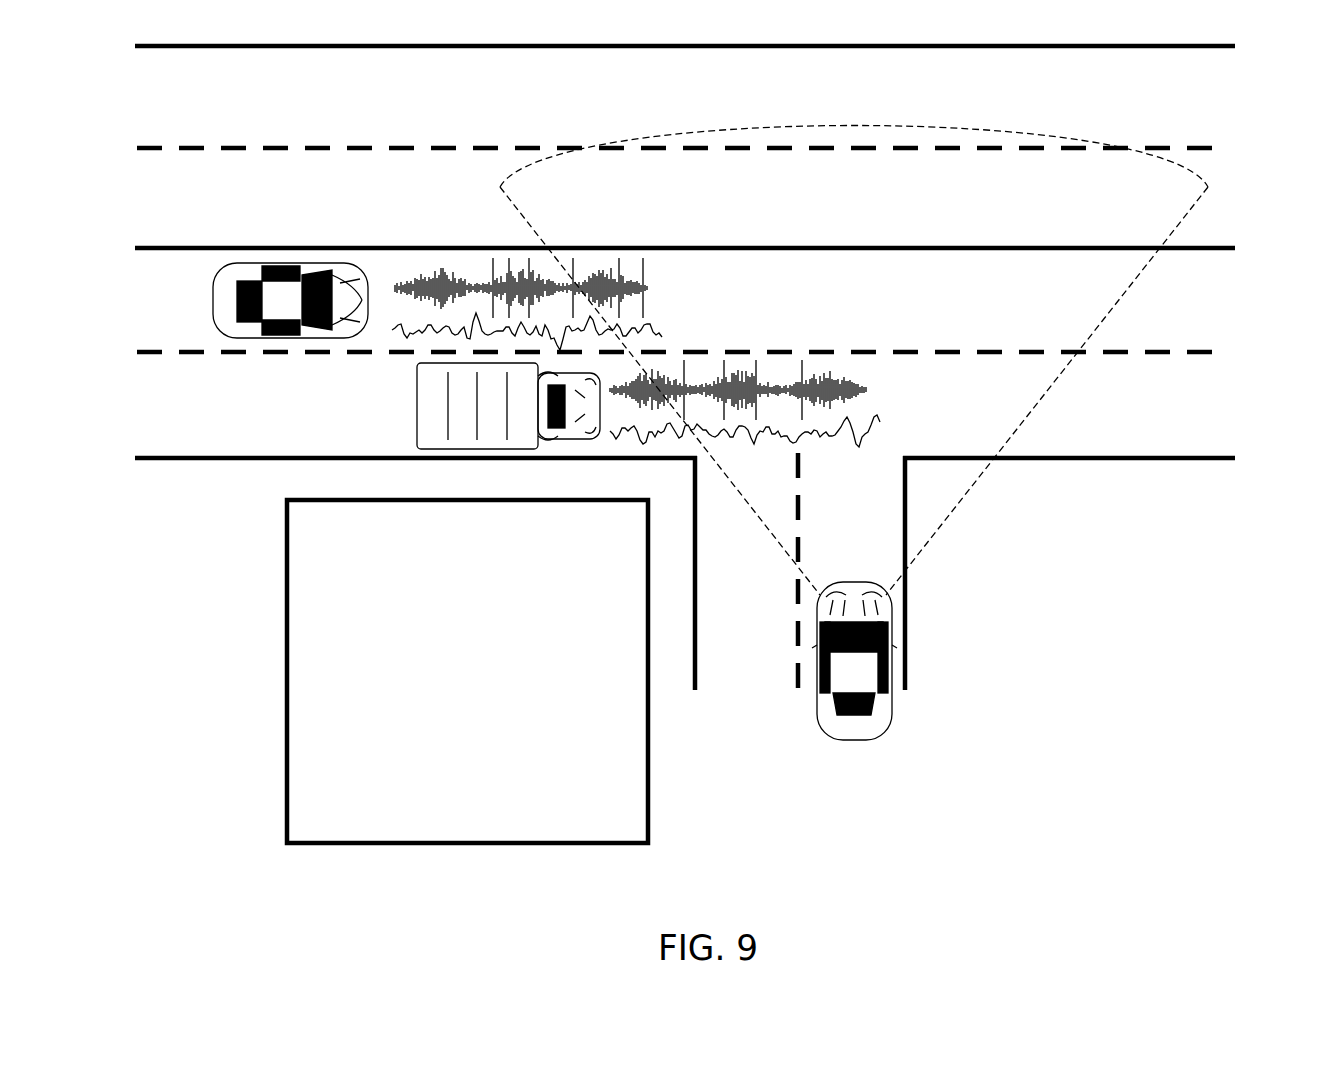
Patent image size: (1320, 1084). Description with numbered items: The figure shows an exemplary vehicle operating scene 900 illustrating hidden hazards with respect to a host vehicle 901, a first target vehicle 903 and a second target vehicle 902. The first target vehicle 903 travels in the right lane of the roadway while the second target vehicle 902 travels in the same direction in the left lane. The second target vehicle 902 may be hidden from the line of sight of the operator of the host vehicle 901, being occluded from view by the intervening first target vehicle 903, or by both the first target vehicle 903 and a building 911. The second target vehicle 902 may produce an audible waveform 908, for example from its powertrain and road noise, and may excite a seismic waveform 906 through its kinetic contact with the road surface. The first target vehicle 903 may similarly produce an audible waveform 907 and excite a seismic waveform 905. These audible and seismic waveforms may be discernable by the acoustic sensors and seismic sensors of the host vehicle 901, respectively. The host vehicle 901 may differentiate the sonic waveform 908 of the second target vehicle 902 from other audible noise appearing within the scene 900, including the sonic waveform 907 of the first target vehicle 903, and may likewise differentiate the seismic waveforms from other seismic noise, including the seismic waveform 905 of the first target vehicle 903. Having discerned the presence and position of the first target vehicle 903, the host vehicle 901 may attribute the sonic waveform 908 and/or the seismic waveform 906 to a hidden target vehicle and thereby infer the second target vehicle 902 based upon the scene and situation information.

The scene 900 is at (1178, 790).
The host vehicle 901 is at (830, 742).
The second target vehicle 902 is at (213, 320).
The first target vehicle 903 is at (417, 432).
The seismic waveform 905 is at (877, 393).
The seismic waveform 906 is at (655, 287).
The audible waveform 907 is at (885, 430).
The audible waveform 908 is at (665, 325).
The building 911 is at (486, 686).